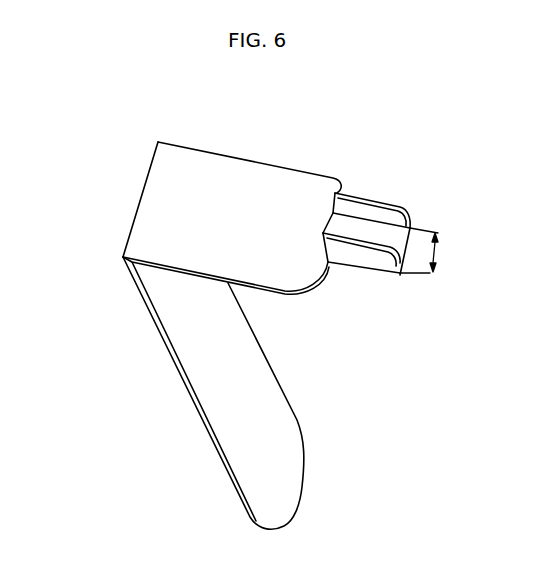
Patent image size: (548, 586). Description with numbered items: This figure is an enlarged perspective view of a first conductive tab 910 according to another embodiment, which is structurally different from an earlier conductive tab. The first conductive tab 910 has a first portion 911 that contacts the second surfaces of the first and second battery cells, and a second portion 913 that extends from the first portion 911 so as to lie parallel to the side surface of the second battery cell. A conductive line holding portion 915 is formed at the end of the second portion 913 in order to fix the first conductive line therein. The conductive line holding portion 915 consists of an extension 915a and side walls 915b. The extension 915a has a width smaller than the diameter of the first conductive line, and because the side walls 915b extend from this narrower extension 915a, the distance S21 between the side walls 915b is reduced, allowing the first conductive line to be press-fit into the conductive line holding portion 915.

The first conductive tab 910 is at (113, 136).
The second portion 913 is at (140, 218).
The first portion 911 is at (157, 303).
The conductive line holding portion 915 is at (417, 141).
The extension 915a is at (388, 230).
The side walls 915b is at (360, 203).
The distance between the side walls S21 is at (438, 250).